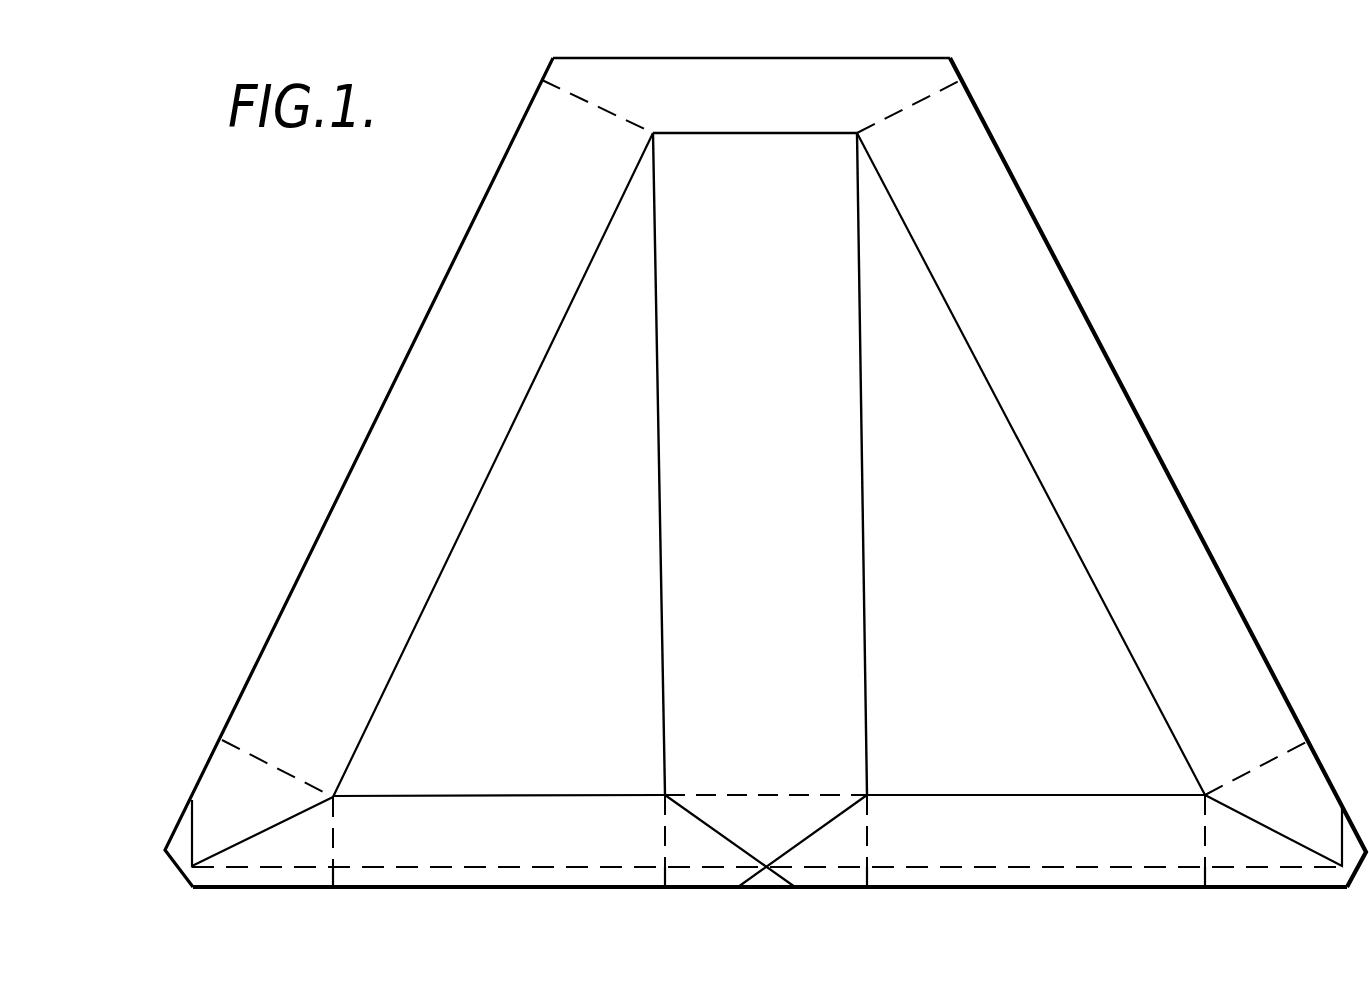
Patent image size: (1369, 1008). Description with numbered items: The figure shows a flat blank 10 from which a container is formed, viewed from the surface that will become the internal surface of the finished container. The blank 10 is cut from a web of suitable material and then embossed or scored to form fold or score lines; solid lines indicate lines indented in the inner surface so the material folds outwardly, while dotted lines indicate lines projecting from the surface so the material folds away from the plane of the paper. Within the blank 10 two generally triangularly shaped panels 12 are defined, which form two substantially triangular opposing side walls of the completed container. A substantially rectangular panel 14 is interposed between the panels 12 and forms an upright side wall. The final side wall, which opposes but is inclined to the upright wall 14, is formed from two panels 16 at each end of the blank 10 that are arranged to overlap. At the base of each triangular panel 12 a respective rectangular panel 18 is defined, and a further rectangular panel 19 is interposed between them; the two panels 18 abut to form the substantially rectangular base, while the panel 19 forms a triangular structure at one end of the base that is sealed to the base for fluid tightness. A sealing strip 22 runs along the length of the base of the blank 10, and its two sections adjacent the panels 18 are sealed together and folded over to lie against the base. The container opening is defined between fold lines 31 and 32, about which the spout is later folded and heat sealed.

The blank 10 is at (1144, 421).
The triangularly shaped panel 12 is at (561, 588).
The rectangular panel 14 is at (771, 592).
The panel 16 is at (381, 571).
The rectangular panel 18 is at (522, 848).
The rectangular panel 19 is at (785, 840).
The sealing strip 22 is at (512, 878).
The fold line 31 is at (897, 119).
The fold line 32 is at (750, 135).